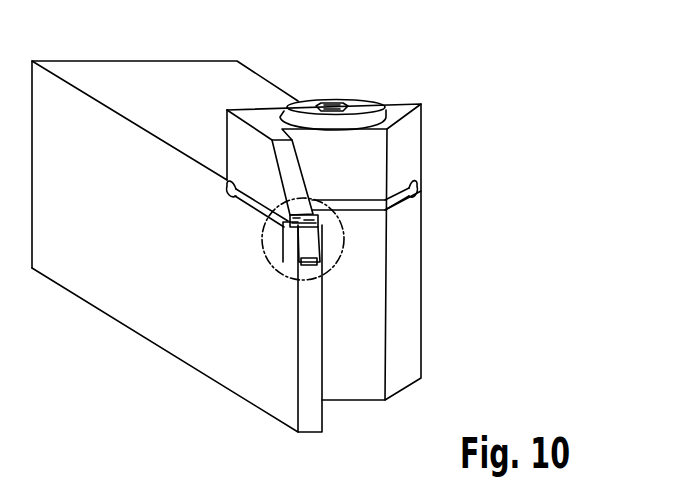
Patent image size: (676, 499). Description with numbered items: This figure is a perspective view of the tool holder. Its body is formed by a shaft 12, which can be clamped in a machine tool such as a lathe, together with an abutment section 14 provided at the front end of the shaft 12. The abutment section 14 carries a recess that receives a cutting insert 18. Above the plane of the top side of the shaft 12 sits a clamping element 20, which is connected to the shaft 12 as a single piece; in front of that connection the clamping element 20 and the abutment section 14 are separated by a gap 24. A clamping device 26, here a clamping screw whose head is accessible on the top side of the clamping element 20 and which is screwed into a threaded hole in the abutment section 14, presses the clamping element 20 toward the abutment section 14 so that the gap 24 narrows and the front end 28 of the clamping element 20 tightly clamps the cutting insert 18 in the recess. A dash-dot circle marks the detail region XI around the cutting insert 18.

The shaft 12 is at (256, 93).
The abutment section 14 is at (268, 388).
The cutting insert 18 is at (308, 250).
The clamping element 20 is at (368, 162).
The gap 24 is at (398, 200).
The clamping device 26 is at (355, 103).
The front end 28 is at (236, 208).
The detail XI is at (345, 253).